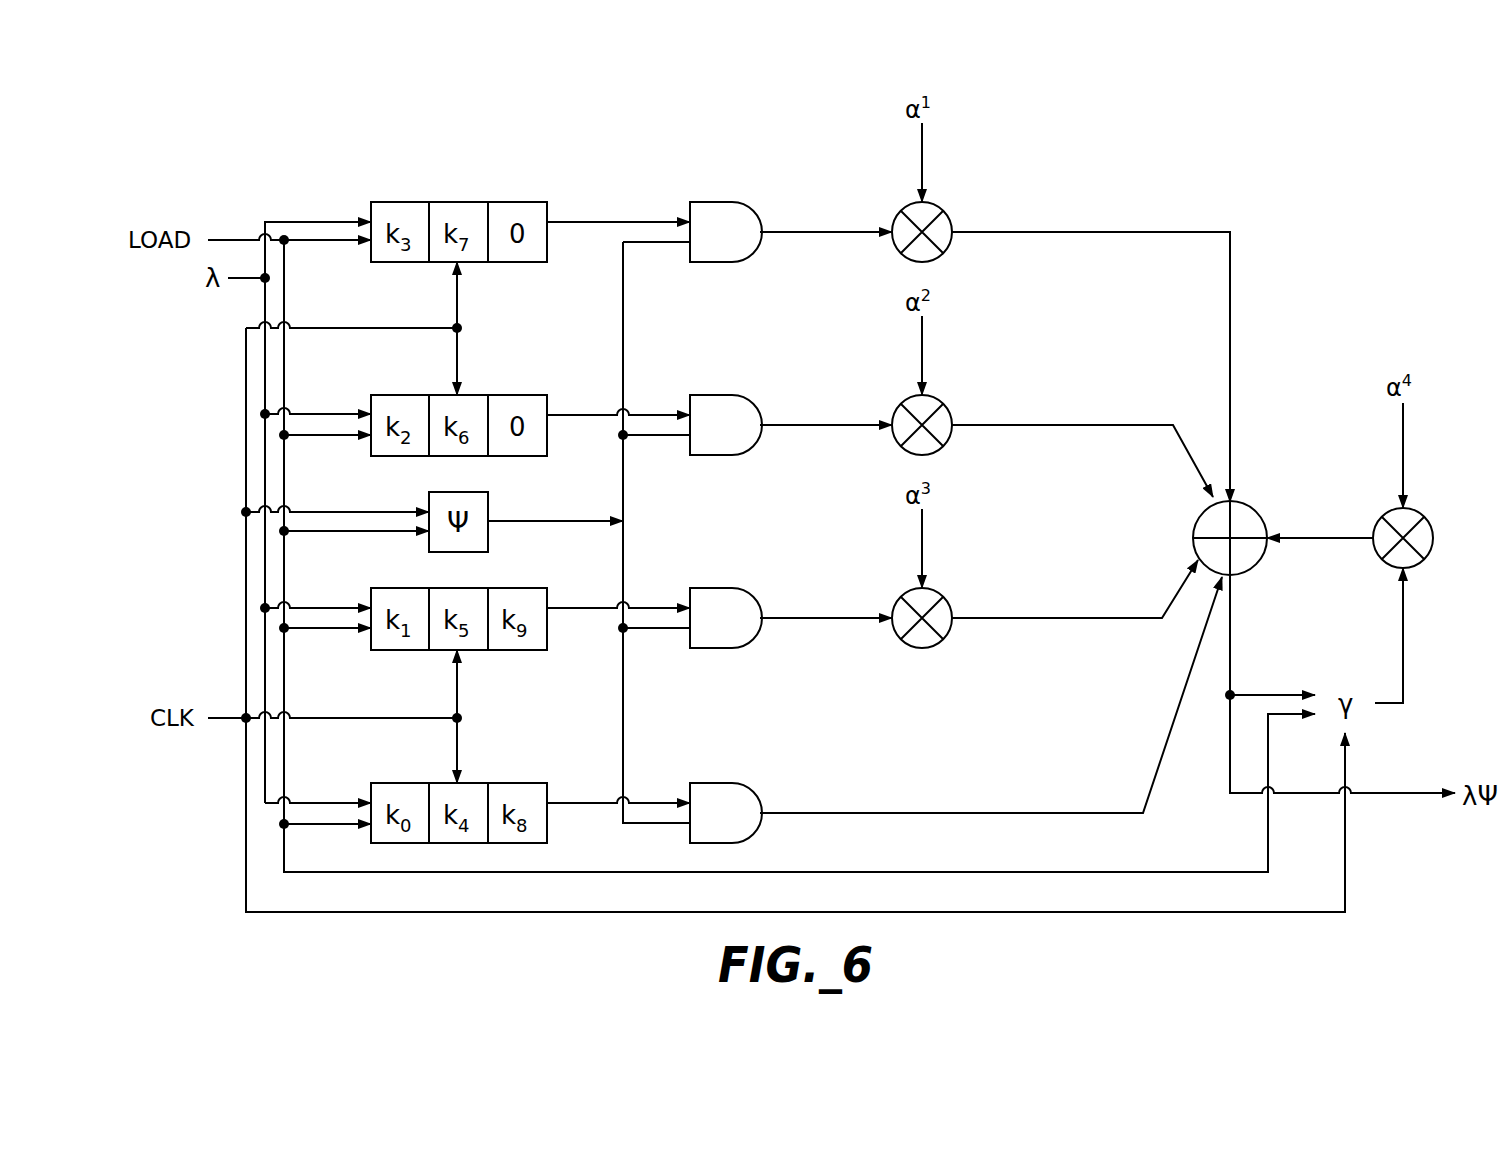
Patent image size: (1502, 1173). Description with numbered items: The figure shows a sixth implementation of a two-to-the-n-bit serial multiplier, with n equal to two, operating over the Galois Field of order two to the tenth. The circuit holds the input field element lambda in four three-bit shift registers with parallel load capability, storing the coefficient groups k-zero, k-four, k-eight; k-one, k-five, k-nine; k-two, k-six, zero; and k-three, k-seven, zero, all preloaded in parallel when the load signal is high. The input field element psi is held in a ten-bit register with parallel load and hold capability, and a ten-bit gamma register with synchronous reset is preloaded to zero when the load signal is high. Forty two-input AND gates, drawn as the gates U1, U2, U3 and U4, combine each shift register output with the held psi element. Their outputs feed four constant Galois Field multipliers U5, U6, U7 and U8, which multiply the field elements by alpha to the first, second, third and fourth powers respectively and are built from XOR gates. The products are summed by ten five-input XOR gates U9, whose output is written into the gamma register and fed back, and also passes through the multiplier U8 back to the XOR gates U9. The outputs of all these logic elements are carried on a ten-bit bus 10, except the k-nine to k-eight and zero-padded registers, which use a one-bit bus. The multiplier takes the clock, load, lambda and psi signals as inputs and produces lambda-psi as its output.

The 10-bit bus 10 is at (530, 529).
The 2-input AND gate U1 is at (726, 217).
The 2-input AND gate U2 is at (726, 410).
The 2-input AND gate U3 is at (726, 603).
The 2-input AND gate U4 is at (726, 798).
The Galois Field multiplier U5 is at (927, 218).
The Galois Field multiplier U6 is at (927, 411).
The Galois Field multiplier U7 is at (927, 604).
The Galois Field multiplier U8 is at (1408, 524).
The 5-input XOR gate U9 is at (1233, 526).